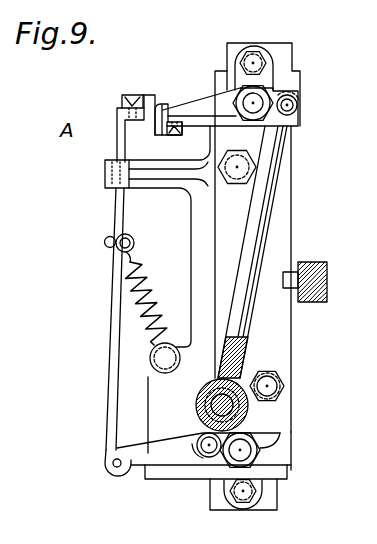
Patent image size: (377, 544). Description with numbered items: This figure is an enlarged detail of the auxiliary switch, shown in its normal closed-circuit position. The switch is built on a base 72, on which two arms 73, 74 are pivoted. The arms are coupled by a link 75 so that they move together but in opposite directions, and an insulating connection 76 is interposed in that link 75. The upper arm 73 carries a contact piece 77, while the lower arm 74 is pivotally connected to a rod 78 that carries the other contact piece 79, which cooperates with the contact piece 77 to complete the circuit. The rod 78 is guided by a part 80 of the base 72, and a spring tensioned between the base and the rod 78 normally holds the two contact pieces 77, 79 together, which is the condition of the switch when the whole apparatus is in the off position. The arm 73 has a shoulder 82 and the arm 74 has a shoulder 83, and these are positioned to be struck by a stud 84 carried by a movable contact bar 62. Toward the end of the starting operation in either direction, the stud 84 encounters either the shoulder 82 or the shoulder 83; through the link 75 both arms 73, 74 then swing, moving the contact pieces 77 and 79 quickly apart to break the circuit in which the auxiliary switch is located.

The movable contact bar 62 is at (327, 293).
The base 72 is at (272, 343).
The arm 73 is at (200, 110).
The arm 74 is at (178, 455).
The link 75 is at (262, 224).
The insulating connection 76 is at (205, 402).
The contact piece 77 is at (162, 105).
The rod 78 is at (110, 378).
The contact piece 79 is at (150, 126).
The part of the base 80 is at (110, 172).
The shoulder 82 is at (300, 133).
The shoulder 83 is at (290, 430).
The stud 84 is at (290, 281).